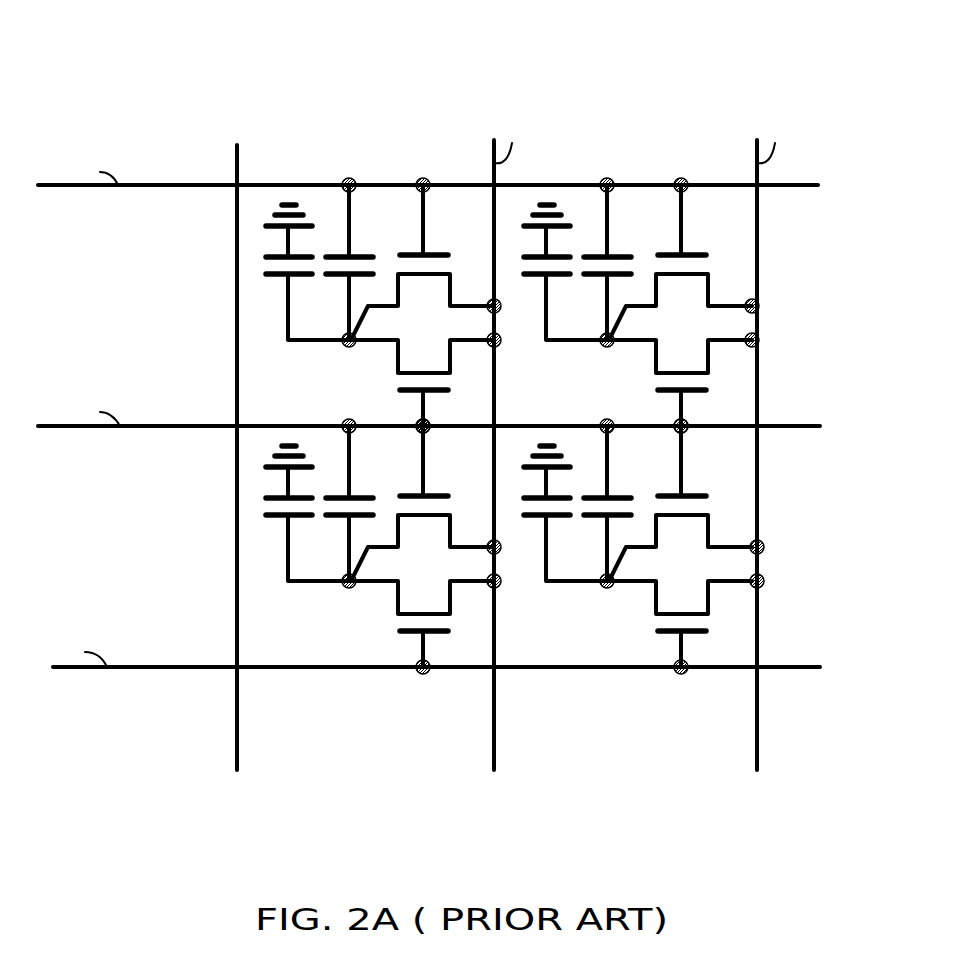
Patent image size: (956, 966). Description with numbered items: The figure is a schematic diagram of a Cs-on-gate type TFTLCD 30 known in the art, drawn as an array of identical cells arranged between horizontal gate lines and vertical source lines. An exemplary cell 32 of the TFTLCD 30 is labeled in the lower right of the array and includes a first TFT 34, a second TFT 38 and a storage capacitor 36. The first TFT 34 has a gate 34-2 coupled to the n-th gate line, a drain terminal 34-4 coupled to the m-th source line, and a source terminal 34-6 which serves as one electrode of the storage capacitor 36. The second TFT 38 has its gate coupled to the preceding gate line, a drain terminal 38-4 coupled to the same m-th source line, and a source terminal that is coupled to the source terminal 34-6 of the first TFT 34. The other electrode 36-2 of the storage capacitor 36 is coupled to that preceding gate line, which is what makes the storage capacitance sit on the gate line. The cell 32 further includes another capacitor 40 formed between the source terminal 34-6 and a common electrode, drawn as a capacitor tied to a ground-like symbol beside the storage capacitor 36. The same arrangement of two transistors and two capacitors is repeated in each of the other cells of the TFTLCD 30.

The TFTLCD 30 is at (197, 105).
The cell 32 is at (676, 564).
The first TFT 34 is at (744, 627).
The gate 34-2 is at (683, 674).
The drain terminal 34-4 is at (768, 583).
The source terminal 34-6 is at (612, 588).
The storage capacitor 36 is at (617, 493).
The other electrode 36-2 is at (605, 419).
The second TFT 38 is at (736, 494).
The drain terminal 38-4 is at (768, 543).
The capacitor 40 is at (533, 518).